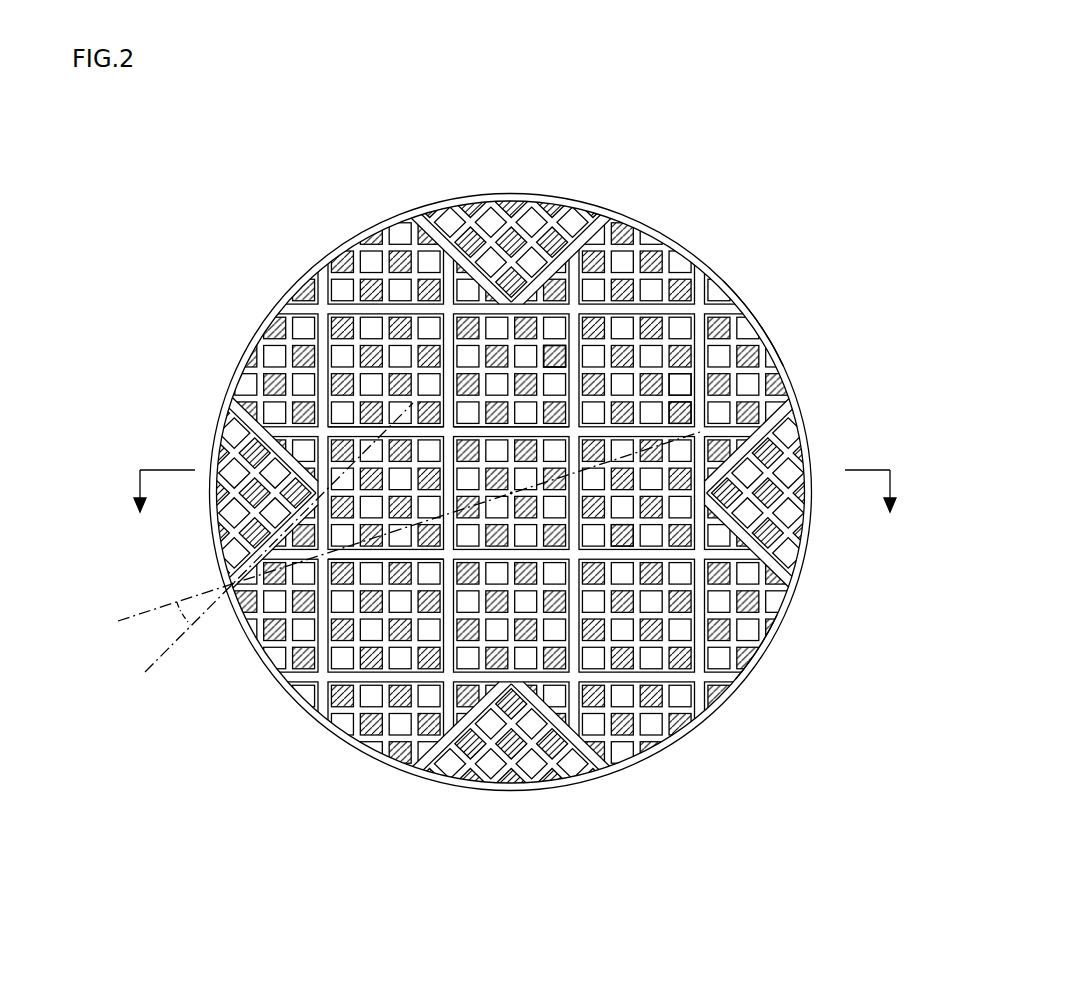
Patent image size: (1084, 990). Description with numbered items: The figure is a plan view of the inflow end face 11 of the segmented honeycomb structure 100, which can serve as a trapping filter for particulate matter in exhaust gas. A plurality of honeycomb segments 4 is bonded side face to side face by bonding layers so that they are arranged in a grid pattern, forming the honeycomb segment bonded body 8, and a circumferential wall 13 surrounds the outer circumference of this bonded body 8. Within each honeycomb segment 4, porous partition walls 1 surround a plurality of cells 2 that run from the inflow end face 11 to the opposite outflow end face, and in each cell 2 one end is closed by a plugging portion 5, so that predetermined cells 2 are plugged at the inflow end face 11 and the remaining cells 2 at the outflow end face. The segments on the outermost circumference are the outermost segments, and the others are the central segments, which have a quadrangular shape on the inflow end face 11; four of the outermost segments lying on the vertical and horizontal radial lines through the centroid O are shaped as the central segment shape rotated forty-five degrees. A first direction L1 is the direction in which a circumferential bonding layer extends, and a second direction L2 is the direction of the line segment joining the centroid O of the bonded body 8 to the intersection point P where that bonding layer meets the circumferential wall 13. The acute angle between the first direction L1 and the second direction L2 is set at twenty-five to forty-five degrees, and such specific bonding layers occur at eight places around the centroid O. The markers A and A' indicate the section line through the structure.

The honeycomb structure 100 is at (862, 143).
The partition walls 1 is at (640, 366).
The cells 2 is at (677, 373).
The honeycomb segments 4 is at (555, 356).
The plugging portion 5 is at (558, 347).
The honeycomb segment bonded body 8 is at (753, 318).
The inflow end face 11 is at (290, 250).
The circumferential wall 13 is at (760, 652).
The centroid O is at (513, 494).
The intersection point P is at (232, 586).
The first direction L1 is at (262, 553).
The second direction L2 is at (390, 536).
The section line A is at (164, 510).
The section line A' is at (874, 509).